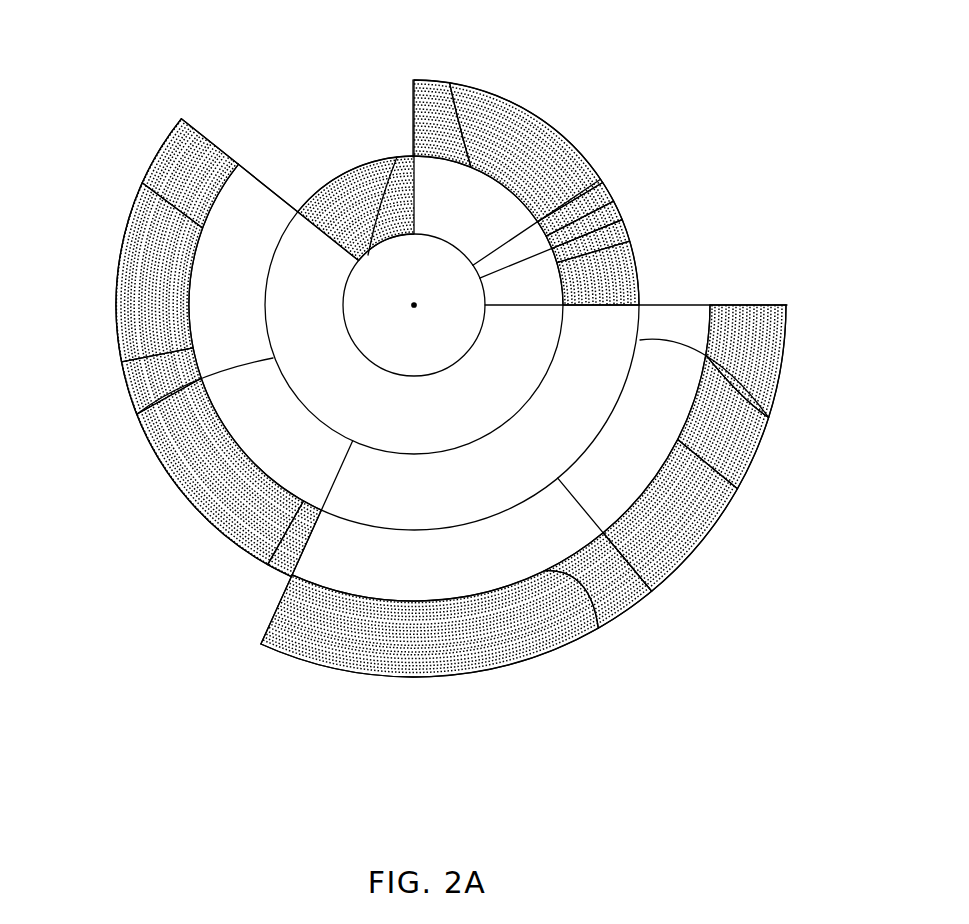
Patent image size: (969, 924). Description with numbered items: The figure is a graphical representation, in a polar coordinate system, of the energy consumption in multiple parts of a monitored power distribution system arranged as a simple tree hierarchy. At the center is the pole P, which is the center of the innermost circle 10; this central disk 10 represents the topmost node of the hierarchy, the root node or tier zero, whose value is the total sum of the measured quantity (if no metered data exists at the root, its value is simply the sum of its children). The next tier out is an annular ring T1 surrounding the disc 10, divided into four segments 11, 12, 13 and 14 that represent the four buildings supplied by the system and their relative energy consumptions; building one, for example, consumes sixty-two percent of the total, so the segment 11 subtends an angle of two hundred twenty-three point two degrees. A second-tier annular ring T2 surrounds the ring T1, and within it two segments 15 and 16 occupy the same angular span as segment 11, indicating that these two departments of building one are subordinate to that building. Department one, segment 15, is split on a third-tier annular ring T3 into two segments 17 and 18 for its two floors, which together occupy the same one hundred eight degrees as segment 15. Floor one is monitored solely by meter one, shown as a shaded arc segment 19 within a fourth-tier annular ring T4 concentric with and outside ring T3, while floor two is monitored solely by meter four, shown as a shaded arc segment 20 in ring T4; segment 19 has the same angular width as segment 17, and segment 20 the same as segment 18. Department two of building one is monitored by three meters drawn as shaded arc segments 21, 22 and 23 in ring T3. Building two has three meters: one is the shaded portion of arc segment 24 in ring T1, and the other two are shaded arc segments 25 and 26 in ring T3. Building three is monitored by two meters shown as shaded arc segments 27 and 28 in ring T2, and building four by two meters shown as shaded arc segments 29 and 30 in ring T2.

The innermost circle 10 is at (397, 157).
The segment 11 is at (129, 420).
The segment 12 is at (450, 80).
The segment 13 is at (622, 216).
The segment 14 is at (640, 291).
The segment 15 is at (770, 418).
The segment 16 is at (135, 176).
The segment 17 is at (740, 490).
The segment 18 is at (600, 628).
The shaded arc segment 19 is at (700, 545).
The shaded arc segment 20 is at (486, 671).
The shaded arc segment 21 is at (280, 572).
The shaded arc segment 22 is at (175, 484).
The shaded arc segment 23 is at (116, 275).
The arc segment 24 is at (366, 160).
The shaded arc segment 25 is at (413, 80).
The shaded arc segment 26 is at (566, 133).
The shaded arc segment 27 is at (607, 190).
The shaded arc segment 28 is at (618, 206).
The shaded arc segment 29 is at (636, 234).
The shaded arc segment 30 is at (640, 270).
The annular ring T1 is at (312, 210).
The annular ring T2 is at (249, 168).
The annular ring T3 is at (195, 122).
The annular ring T4 is at (273, 610).
The pole P is at (414, 305).